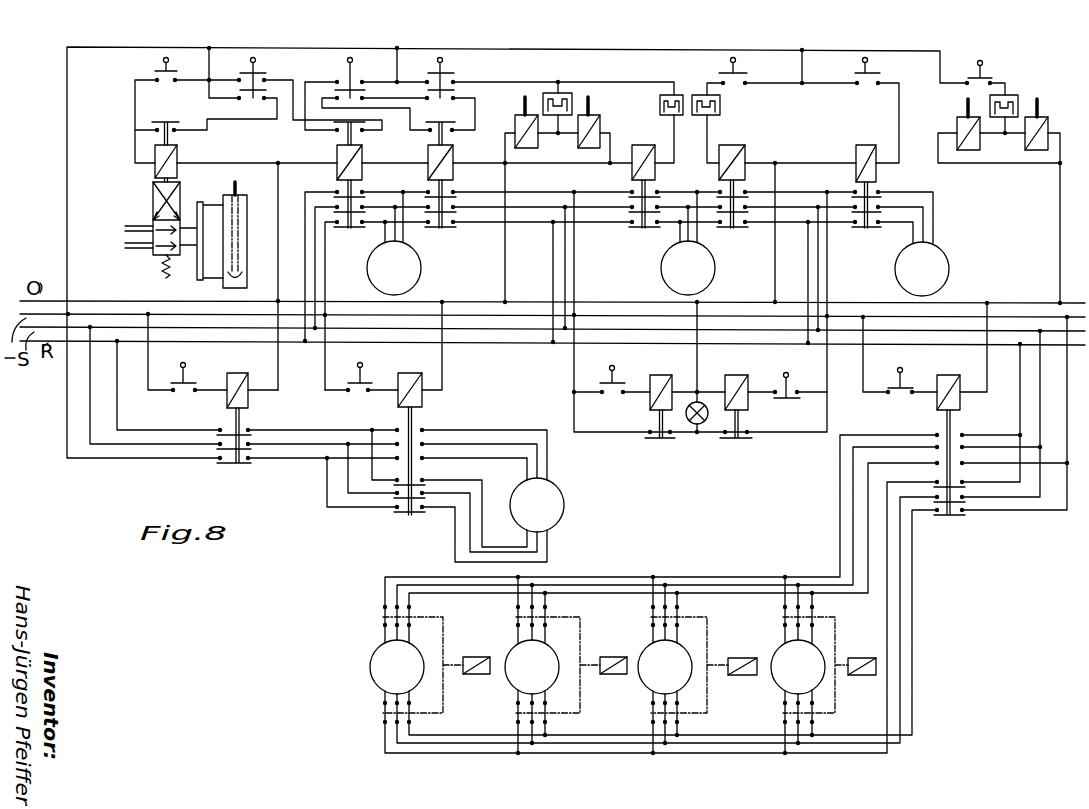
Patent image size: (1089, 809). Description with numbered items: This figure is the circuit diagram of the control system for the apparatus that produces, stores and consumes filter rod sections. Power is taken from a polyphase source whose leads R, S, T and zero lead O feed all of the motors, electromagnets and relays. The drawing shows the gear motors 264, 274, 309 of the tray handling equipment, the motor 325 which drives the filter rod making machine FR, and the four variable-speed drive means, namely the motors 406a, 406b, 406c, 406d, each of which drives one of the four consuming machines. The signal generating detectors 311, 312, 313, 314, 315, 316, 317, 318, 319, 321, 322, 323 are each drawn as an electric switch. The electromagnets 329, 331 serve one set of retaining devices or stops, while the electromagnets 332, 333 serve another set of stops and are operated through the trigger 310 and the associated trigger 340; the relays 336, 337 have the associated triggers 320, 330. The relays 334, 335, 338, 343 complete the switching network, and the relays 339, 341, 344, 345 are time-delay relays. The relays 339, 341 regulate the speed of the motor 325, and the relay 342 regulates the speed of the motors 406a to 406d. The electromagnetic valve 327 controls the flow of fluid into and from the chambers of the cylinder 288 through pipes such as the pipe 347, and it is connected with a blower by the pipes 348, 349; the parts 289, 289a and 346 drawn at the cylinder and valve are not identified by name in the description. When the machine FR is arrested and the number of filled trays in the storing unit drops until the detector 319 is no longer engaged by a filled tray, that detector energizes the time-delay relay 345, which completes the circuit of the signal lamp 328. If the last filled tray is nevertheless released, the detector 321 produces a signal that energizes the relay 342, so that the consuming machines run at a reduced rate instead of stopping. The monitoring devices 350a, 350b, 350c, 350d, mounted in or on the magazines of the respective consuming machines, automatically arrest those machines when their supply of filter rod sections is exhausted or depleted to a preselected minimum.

The gear motor 264 is at (702, 275).
The gear motor 274 is at (940, 262).
The cylinder 288 is at (240, 254).
The piston 289 is at (242, 281).
The piston rod 289a is at (237, 191).
The gear motor 309 is at (412, 262).
The trigger 310 is at (560, 93).
The signal generating detector 311 is at (353, 63).
The signal generating detector 312 is at (870, 62).
The signal generating detector 313 is at (444, 62).
The signal generating detector 314 is at (256, 64).
The signal generating detector 315 is at (740, 62).
The signal generating detector 316 is at (180, 369).
The signal generating detector 317 is at (357, 370).
The signal generating detector 318 is at (623, 368).
The detector 319 is at (800, 360).
The trigger 320 is at (661, 102).
The detector 321 is at (896, 378).
The signal generating detector 322 is at (984, 64).
The signal generating detector 323 is at (160, 71).
The motor 325 is at (552, 518).
The electromagnetic valve 327 is at (181, 193).
The signal lamp 328 is at (691, 425).
The electromagnet 329 is at (521, 116).
The trigger 330 is at (722, 100).
The electromagnet 331 is at (588, 105).
The electromagnet 332 is at (964, 116).
The electromagnet 333 is at (1044, 117).
The relay 334 is at (362, 174).
The relay 335 is at (456, 170).
The relay 336 is at (662, 140).
The relay 337 is at (765, 141).
The relay 338 is at (883, 143).
The time-delay relay 339 is at (257, 362).
The trigger 340 is at (1012, 95).
The time-delay relay 341 is at (431, 363).
The relay 342 is at (972, 366).
The relay 343 is at (177, 151).
The time-delay relay 344 is at (682, 360).
The time-delay relay 345 is at (731, 368).
The return spring 346 is at (188, 289).
The pipe 347 is at (181, 238).
The pipe 348 is at (143, 253).
The pipe 349 is at (141, 223).
The monitoring device 350a is at (866, 676).
The monitoring device 350b is at (746, 676).
The monitoring device 350c is at (616, 675).
The monitoring device 350d is at (478, 675).
The variable-speed drive motor 406a is at (784, 660).
The variable-speed drive motor 406b is at (652, 660).
The variable-speed drive motor 406c is at (517, 663).
The variable-speed drive motor 406d is at (383, 664).